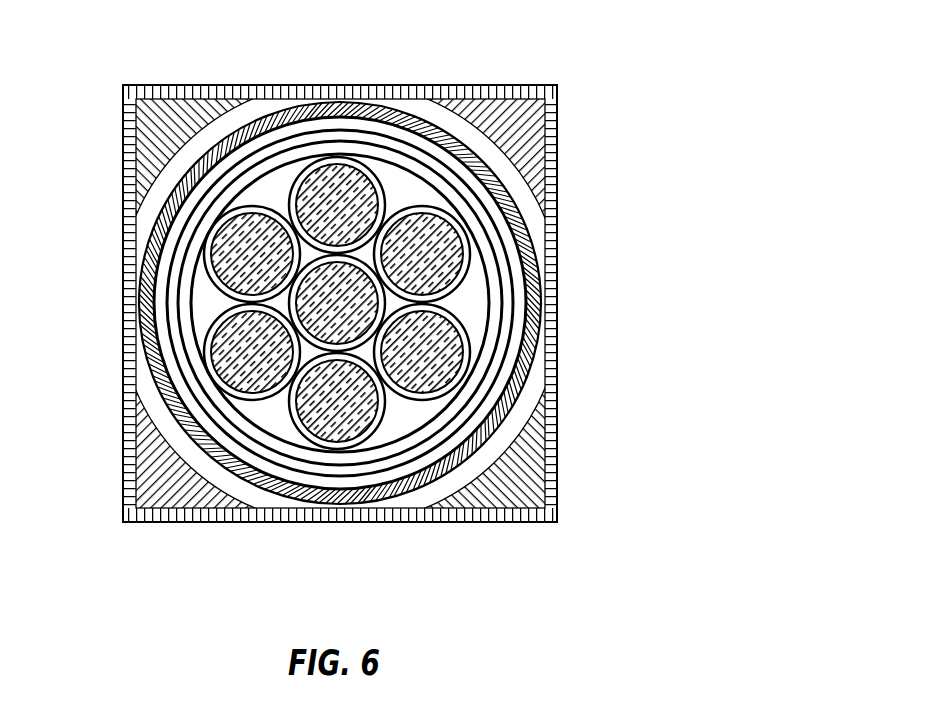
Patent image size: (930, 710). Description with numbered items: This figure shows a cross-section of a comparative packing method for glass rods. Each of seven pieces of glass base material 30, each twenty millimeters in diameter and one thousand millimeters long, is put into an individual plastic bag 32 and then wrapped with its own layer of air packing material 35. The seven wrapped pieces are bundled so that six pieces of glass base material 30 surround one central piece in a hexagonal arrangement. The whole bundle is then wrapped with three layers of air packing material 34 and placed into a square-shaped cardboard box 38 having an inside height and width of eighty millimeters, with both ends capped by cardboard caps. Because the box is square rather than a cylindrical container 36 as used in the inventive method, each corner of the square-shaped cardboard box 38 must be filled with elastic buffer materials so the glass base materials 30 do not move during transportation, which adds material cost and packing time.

The glass base material 30 is at (220, 257).
The plastic bag 32 is at (263, 212).
The air packing material 34 is at (557, 140).
The air packing material 35 is at (367, 163).
The cylindrical container 36 is at (285, 495).
The square-shaped cardboard box 38 is at (226, 86).